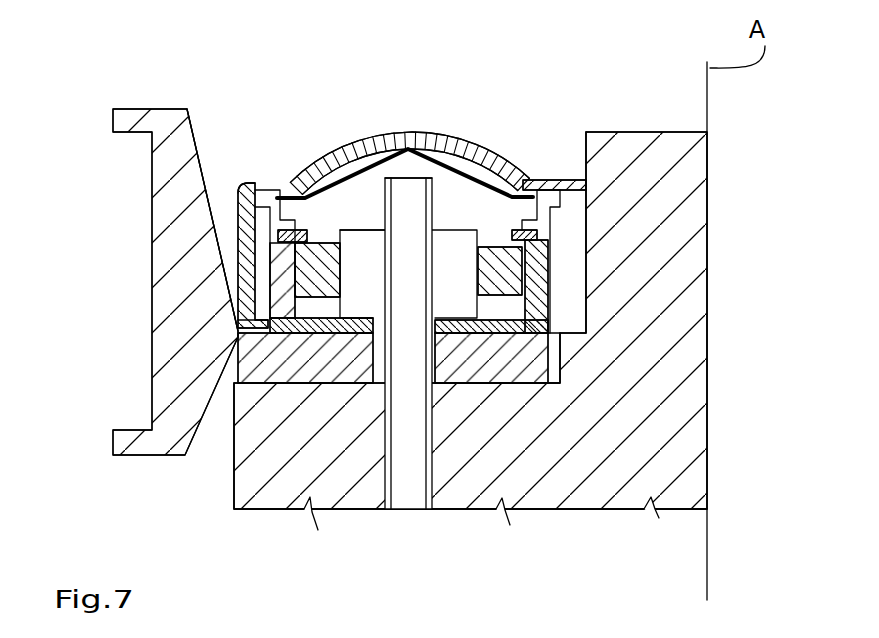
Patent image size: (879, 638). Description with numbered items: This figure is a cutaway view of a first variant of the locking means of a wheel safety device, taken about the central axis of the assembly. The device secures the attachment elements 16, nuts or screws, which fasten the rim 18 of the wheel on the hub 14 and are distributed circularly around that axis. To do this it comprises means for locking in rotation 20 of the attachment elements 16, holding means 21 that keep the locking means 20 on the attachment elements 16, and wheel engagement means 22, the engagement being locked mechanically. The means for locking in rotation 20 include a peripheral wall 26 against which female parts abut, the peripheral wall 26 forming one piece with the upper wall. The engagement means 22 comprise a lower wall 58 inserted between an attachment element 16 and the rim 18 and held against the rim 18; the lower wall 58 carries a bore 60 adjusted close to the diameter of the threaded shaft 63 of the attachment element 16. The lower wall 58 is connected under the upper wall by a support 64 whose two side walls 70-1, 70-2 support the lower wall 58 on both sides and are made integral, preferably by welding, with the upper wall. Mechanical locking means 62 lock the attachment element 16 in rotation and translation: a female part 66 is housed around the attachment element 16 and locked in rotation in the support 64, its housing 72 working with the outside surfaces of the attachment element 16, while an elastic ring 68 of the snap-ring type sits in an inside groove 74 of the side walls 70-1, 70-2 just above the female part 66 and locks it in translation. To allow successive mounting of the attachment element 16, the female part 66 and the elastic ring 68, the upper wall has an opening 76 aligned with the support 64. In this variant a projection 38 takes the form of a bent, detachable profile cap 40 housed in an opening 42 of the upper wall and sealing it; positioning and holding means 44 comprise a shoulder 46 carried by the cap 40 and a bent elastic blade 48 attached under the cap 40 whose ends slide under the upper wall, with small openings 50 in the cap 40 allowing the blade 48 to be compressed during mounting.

The hub 14 is at (368, 493).
The attachment elements 16 is at (450, 228).
The rim 18 is at (152, 400).
The means for locking in rotation 20 is at (233, 383).
The holding means 21 is at (473, 138).
The wheel engagement means 22 is at (580, 276).
The peripheral wall 26 is at (565, 248).
The projection 38 is at (391, 125).
The profile cap 40 is at (428, 176).
The opening 42 is at (548, 178).
The positioning and holding means 44 is at (378, 142).
The shoulder 46 is at (218, 213).
The elastic blade 48 is at (325, 137).
The small openings 50 is at (296, 186).
The lower wall 58 is at (308, 307).
The bore 60 is at (296, 335).
The mechanical locking means 62 is at (250, 185).
The threaded shaft 63 is at (407, 495).
The support 64 is at (255, 316).
The female part 66 is at (510, 283).
The elastic ring 68 is at (537, 233).
The side wall 70-1 is at (535, 305).
The side wall 70-2 is at (258, 282).
The housing 72 is at (447, 255).
The inside groove 74 is at (292, 236).
The opening 76 is at (282, 185).